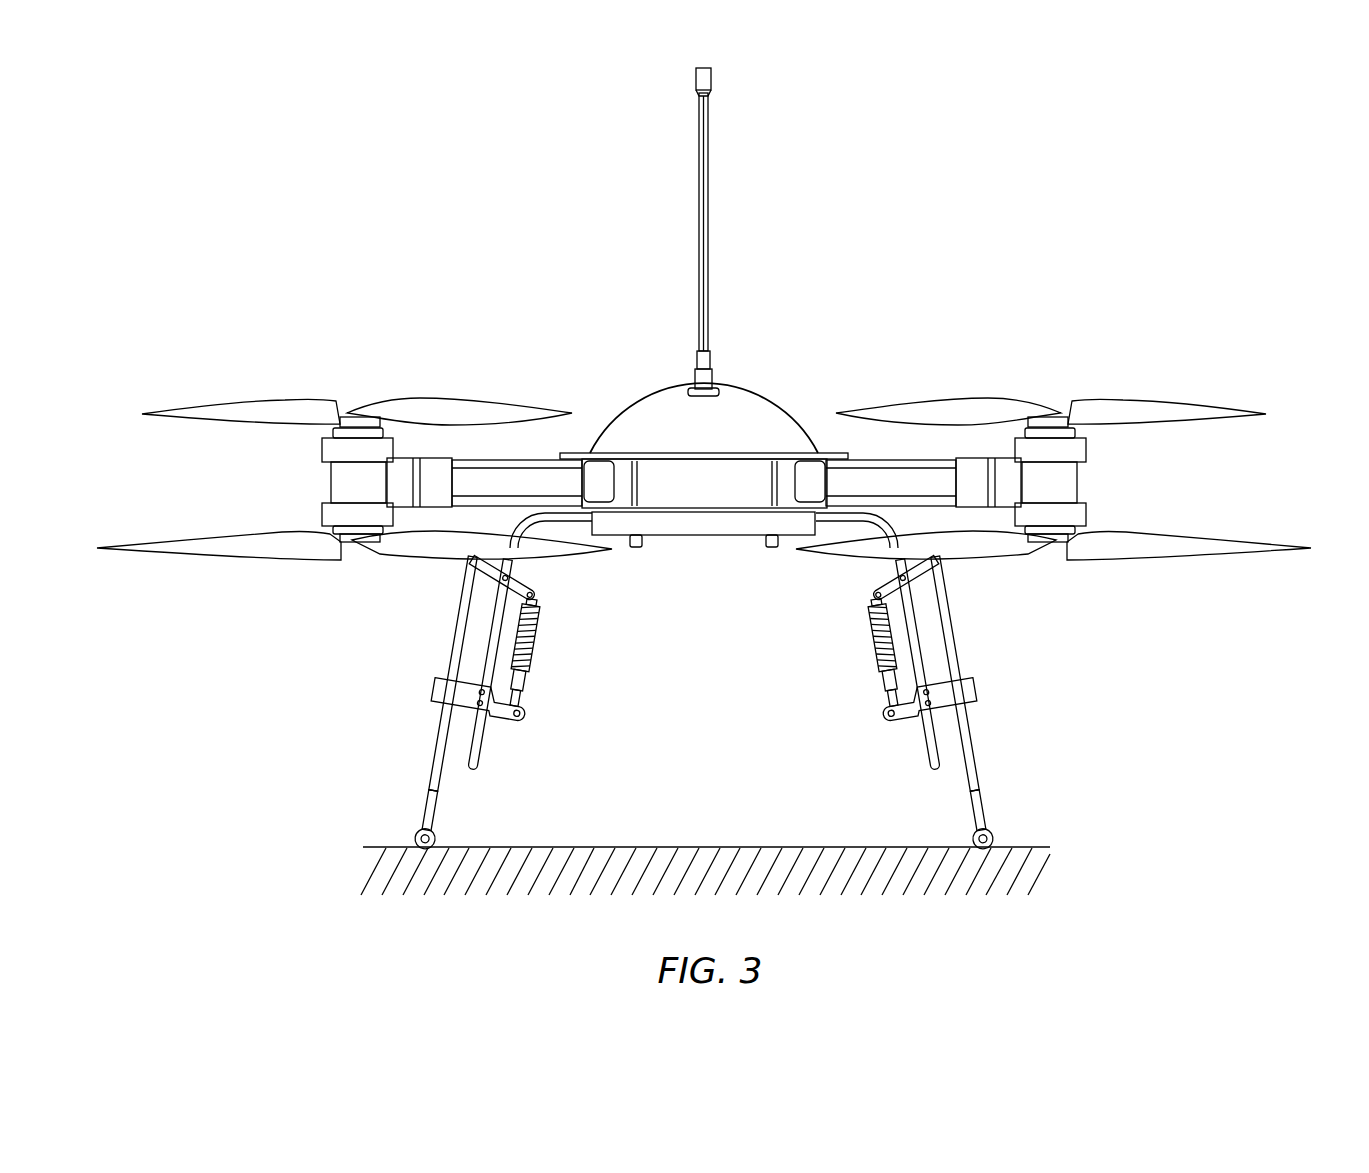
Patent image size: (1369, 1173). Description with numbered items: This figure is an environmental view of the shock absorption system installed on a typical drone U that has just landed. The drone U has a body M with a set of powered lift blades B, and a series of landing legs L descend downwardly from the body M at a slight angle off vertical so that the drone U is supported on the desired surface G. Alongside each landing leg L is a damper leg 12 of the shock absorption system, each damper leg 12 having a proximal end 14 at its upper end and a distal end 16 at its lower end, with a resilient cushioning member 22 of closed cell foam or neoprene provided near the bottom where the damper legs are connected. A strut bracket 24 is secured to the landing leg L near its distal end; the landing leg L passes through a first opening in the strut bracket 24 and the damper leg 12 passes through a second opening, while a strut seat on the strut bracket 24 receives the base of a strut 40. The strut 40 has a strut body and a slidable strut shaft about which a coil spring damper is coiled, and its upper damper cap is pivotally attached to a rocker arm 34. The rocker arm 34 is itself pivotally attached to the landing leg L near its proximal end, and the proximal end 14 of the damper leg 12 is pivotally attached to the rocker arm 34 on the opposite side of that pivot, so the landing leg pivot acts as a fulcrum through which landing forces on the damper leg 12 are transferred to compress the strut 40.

The damper leg 12 is at (716, 702).
The proximal end 14 is at (938, 560).
The distal end 16 is at (418, 790).
The cushioning member 22 is at (431, 842).
The strut bracket 24 is at (703, 729).
The rocker arm 34 is at (704, 577).
The strut 40 is at (703, 657).
The lift blades B is at (428, 405).
The body M is at (669, 400).
The drone U is at (704, 417).
The landing leg L is at (915, 646).
The surface G is at (682, 845).